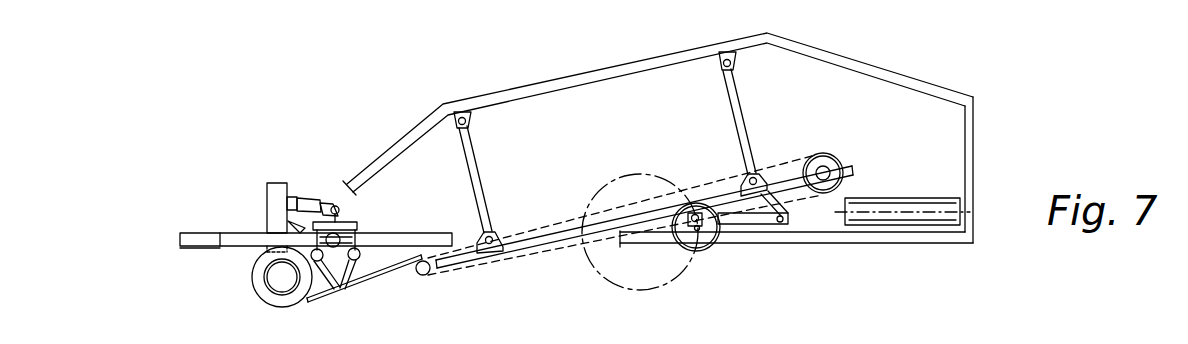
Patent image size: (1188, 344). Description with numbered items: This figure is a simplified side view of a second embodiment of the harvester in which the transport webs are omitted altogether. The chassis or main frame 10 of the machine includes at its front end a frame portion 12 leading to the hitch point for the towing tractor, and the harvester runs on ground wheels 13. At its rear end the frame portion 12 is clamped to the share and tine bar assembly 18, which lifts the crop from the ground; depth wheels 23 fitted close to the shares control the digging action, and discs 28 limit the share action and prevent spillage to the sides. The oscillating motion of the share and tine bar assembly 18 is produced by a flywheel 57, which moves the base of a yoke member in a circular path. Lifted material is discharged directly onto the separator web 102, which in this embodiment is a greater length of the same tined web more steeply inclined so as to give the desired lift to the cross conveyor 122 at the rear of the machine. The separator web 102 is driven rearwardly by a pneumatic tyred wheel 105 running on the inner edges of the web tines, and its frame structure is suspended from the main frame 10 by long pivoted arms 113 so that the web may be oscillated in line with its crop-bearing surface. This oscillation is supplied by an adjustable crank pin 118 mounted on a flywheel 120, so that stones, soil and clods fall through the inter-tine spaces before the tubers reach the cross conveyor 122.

The main frame 10 is at (562, 83).
The frame portion 12 is at (232, 237).
The ground wheels 13 is at (638, 173).
The share and tine bar assembly 18 is at (346, 300).
The depth wheels 23 is at (275, 285).
The discs 28 is at (257, 280).
The flywheel 57 is at (281, 186).
The separator web 102 is at (702, 193).
The pneumatic tyred wheel 105 is at (818, 155).
The pivoted arms 113 is at (476, 177).
The crank pin 118 is at (755, 223).
The flywheel 120 is at (704, 251).
The cross conveyor 122 is at (903, 197).